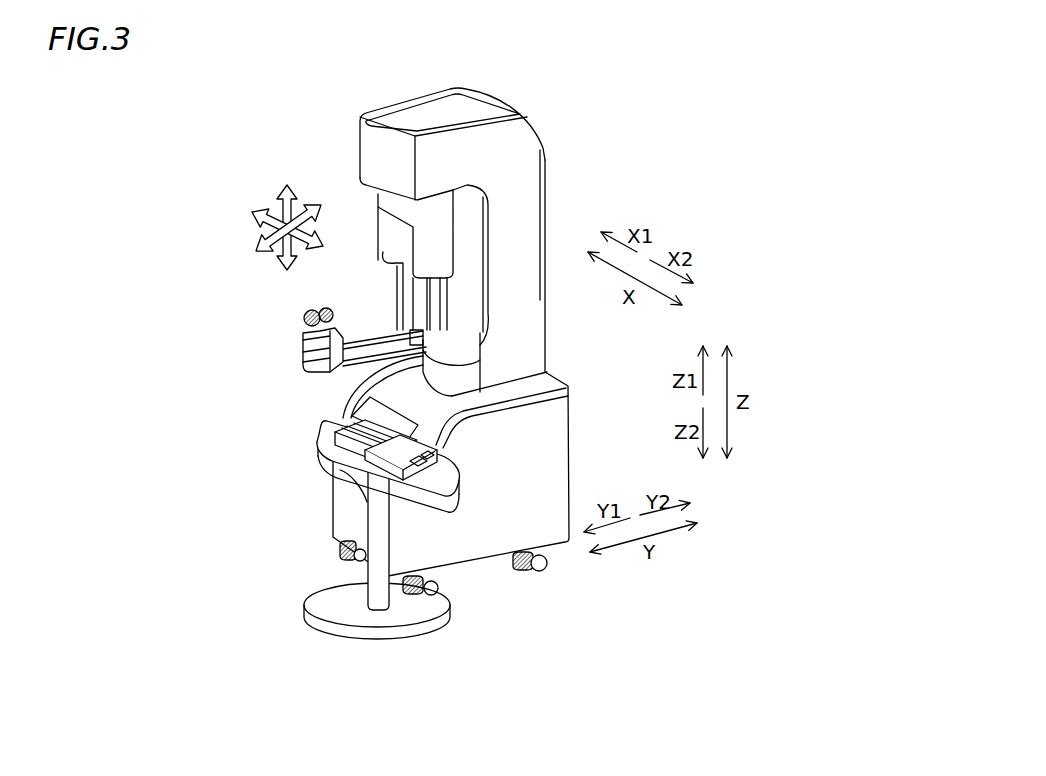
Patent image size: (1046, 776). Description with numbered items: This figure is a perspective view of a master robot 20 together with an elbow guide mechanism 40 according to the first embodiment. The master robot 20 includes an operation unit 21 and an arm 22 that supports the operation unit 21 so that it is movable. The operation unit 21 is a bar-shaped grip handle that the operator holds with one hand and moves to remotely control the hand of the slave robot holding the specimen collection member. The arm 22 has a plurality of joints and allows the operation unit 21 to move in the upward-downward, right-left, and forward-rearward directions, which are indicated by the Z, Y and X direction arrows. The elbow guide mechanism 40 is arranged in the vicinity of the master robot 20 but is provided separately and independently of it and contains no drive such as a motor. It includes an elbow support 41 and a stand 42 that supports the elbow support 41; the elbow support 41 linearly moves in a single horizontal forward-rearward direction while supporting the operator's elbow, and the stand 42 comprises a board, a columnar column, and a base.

The master robot 20 is at (562, 146).
The operation unit 21 is at (292, 306).
The arm 22 is at (374, 302).
The elbow guide mechanism 40 is at (313, 420).
The elbow support 41 is at (446, 457).
The stand 42 is at (360, 518).